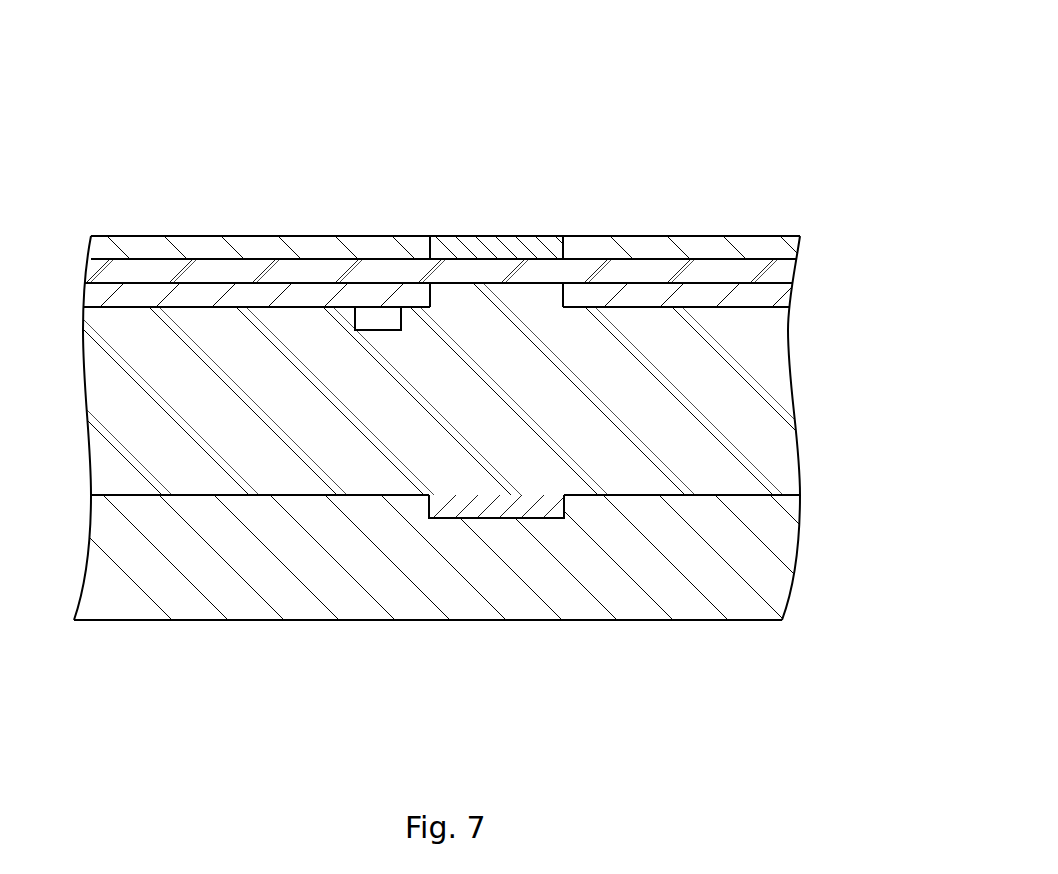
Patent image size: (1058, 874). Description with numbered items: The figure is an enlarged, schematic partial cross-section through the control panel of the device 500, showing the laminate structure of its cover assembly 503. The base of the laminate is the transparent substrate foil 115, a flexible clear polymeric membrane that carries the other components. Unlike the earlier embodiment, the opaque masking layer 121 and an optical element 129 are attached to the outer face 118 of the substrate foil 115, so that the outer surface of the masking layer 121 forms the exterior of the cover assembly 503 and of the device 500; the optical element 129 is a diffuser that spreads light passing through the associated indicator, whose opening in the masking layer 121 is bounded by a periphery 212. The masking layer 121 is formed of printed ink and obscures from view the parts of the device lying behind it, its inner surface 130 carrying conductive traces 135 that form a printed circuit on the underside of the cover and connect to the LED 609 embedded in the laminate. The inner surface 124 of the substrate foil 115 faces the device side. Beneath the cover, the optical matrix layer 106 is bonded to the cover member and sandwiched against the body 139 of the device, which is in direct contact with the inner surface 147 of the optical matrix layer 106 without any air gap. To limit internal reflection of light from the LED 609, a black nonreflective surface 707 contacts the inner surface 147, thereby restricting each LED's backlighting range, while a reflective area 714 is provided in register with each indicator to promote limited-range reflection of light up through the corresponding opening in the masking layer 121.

The device 500 is at (636, 72).
The outer face 118 is at (321, 253).
The circular periphery 212 is at (435, 247).
The optical element 129 is at (535, 243).
The masking layer 121 is at (688, 245).
The substrate foil 115 is at (732, 270).
The cover assembly 503 is at (803, 267).
The conductive traces 135 is at (782, 296).
The inner surface 124 is at (141, 286).
The inner surface 130 is at (233, 263).
The button LED 609 is at (396, 318).
The optical matrix layer 106 is at (781, 440).
The inner surface 147 is at (130, 494).
The nonreflective surface 707 is at (287, 494).
The reflective area 714 is at (531, 494).
The body 139 is at (755, 609).